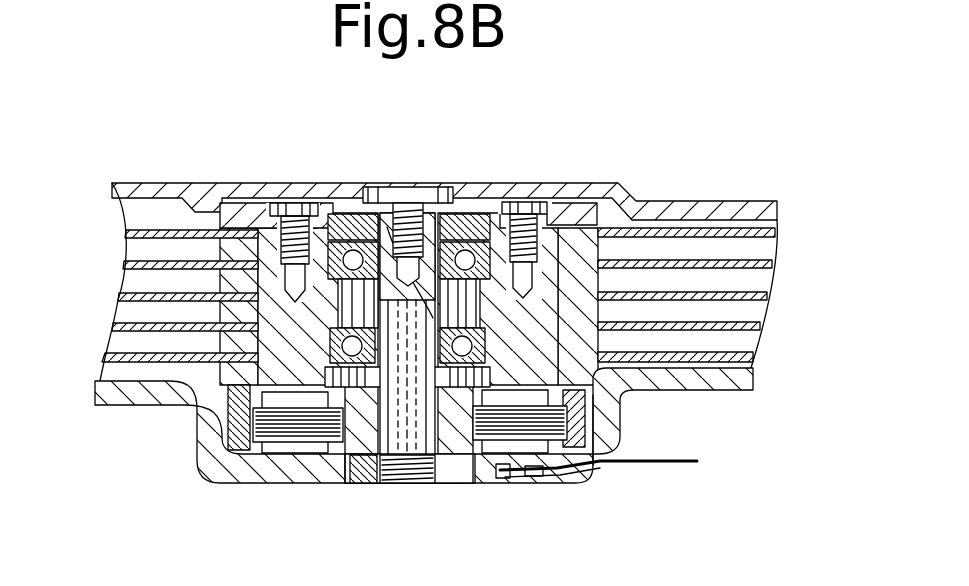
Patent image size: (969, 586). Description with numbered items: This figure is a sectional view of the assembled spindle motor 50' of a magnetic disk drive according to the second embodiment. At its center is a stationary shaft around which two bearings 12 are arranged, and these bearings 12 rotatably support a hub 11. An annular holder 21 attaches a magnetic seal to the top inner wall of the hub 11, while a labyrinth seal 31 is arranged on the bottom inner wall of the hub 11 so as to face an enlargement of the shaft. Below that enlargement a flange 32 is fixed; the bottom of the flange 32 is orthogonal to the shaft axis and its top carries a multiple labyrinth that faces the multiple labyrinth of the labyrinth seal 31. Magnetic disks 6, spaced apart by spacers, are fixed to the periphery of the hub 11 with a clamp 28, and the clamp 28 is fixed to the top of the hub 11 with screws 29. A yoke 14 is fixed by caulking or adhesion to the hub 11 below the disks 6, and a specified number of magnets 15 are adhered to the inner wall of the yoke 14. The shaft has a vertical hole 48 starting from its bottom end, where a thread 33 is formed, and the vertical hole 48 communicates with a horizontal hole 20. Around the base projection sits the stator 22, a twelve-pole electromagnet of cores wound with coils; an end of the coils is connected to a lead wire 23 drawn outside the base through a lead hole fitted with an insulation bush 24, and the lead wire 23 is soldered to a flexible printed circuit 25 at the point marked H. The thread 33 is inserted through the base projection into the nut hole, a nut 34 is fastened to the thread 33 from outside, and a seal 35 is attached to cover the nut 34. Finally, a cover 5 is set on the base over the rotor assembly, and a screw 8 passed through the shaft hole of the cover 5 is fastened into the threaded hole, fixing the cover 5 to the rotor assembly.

The cover 5 is at (696, 201).
The magnetic disks 6 is at (150, 262).
The screw 8 is at (405, 187).
The hub 11 is at (180, 387).
The bearings 12 is at (463, 340).
The yoke 14 is at (583, 417).
The magnets 15 is at (588, 437).
The horizontal hole 20 is at (421, 300).
The annular holder 21 is at (338, 213).
The stator 22 is at (280, 452).
The lead wire 23 is at (523, 473).
The insulation bush 24 is at (500, 477).
The flexible printed circuit 25 is at (683, 463).
The clamp 28 is at (203, 200).
The screws 29 is at (293, 203).
The labyrinth seal 31 is at (230, 428).
The flange 32 is at (347, 440).
The thread 33 is at (430, 485).
The nut 34 is at (376, 485).
The seal 35 is at (394, 488).
The vertical hole 48 is at (393, 485).
The soldering point H is at (597, 477).
The spindle motor 50' is at (87, 155).